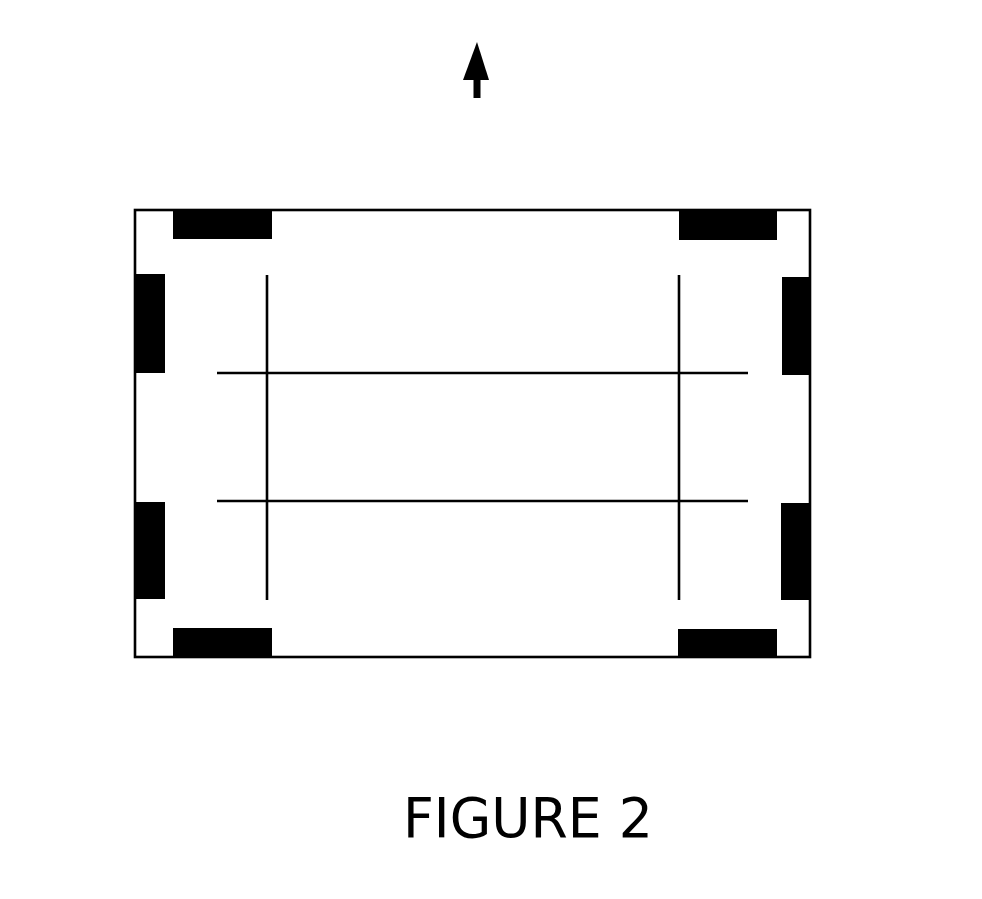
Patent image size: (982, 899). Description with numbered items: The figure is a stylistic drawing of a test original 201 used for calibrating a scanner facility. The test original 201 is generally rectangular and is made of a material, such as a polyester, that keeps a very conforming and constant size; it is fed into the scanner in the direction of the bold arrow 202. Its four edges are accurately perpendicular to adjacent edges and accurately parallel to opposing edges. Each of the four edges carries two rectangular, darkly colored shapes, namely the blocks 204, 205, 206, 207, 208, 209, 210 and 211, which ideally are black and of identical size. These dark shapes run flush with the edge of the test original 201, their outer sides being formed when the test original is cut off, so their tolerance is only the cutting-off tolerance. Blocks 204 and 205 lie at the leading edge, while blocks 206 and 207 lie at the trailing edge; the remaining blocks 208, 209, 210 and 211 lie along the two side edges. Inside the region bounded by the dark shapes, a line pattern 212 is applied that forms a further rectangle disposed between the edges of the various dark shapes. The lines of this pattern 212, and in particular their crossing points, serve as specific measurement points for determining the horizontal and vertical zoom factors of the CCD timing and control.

The test original 201 is at (408, 152).
The bold arrow 202 is at (488, 58).
The dark rectangular shape 204 is at (230, 210).
The dark rectangular shape 205 is at (725, 210).
The dark rectangular shape 206 is at (237, 657).
The dark rectangular shape 207 is at (710, 657).
The dark rectangular shape 208 is at (810, 303).
The dark rectangular shape 209 is at (813, 527).
The dark rectangular shape 210 is at (135, 355).
The dark rectangular shape 211 is at (135, 578).
The line pattern 212 is at (441, 346).